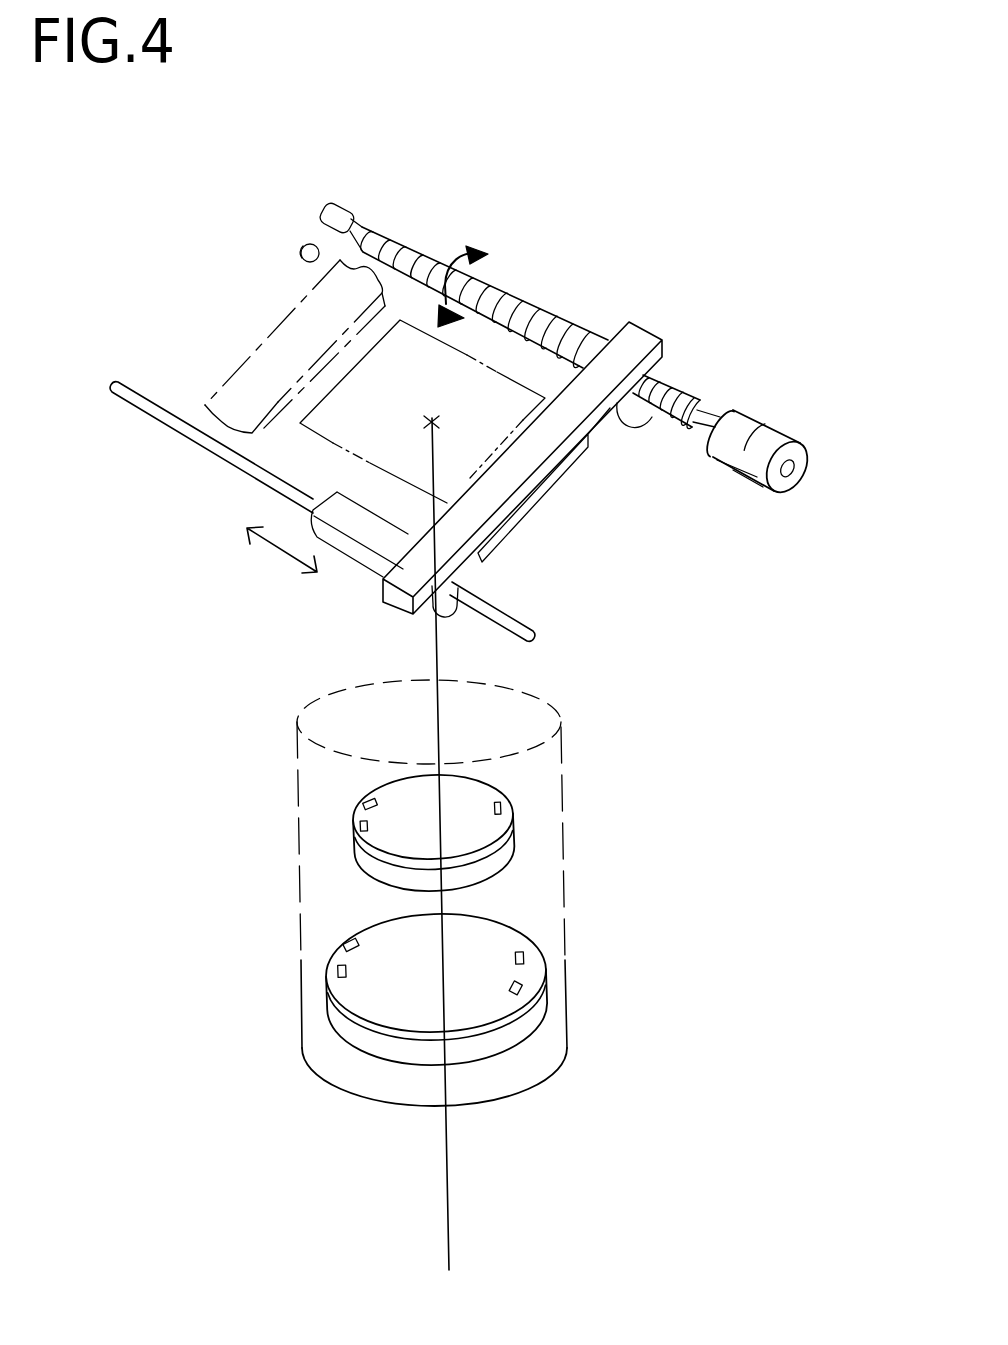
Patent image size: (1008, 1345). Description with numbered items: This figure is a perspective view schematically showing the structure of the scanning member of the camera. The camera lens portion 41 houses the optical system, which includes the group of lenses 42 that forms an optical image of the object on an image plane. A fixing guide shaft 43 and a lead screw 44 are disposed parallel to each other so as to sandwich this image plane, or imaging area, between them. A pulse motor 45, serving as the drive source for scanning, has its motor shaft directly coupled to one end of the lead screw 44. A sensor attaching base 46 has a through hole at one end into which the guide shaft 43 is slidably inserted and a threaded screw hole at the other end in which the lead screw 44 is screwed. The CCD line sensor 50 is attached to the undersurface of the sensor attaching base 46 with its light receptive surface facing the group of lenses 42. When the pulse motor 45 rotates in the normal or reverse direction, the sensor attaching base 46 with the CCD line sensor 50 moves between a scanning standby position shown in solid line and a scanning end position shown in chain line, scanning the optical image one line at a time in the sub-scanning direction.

The camera lens portion 41 is at (300, 885).
The group of lenses 42 is at (517, 840).
The fixing guide shaft 43 is at (133, 399).
The lead screw 44 is at (520, 306).
The pulse motor 45 is at (808, 444).
The sensor attaching base 46 is at (275, 327).
The CCD line sensor 50 is at (512, 522).